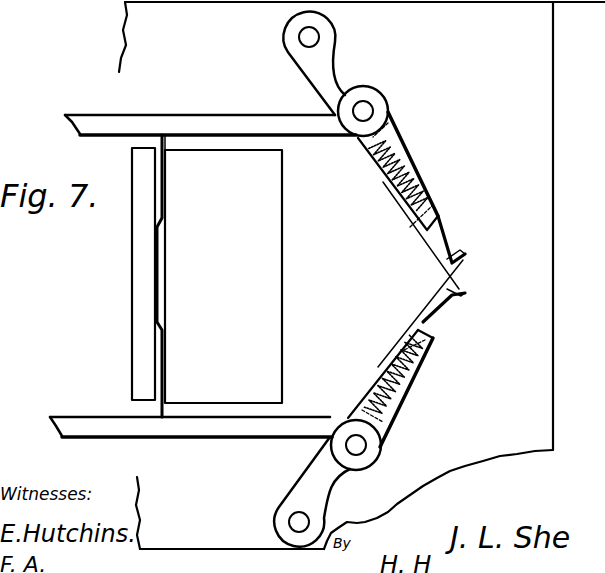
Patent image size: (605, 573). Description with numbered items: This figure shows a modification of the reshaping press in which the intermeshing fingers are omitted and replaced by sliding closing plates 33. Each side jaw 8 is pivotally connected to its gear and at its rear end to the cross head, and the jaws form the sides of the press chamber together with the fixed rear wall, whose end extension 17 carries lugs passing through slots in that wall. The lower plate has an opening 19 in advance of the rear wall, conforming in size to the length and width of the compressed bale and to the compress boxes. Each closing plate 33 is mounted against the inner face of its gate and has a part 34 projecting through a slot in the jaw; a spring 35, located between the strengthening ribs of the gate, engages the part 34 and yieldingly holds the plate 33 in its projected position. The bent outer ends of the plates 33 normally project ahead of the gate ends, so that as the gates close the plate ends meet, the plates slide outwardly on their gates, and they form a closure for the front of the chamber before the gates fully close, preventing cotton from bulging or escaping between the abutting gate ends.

The side jaw 8 is at (237, 123).
The end extension of the rear wall 17 is at (163, 185).
The opening 19 is at (223, 276).
The sliding closing plate 33 is at (430, 252).
The projecting part 34 is at (437, 209).
The spring 35 is at (410, 173).